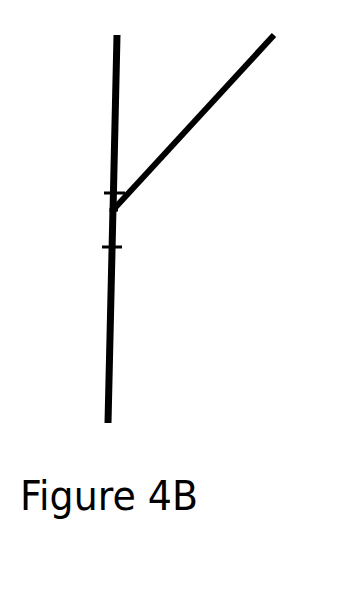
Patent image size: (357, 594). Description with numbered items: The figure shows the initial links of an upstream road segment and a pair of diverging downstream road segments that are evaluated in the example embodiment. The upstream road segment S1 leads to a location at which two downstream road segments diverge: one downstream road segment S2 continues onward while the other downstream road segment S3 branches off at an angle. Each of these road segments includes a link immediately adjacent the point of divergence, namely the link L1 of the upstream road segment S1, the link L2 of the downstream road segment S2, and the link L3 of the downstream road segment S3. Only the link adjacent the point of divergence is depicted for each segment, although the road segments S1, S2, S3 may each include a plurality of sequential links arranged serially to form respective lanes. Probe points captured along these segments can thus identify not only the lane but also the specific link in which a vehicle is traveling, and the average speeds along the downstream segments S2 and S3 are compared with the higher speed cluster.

The upstream road segment S1 is at (86, 315).
The diverging downstream road segment S2 is at (90, 123).
The diverging downstream road segment S3 is at (193, 122).
The link L1 is at (102, 239).
The link L2 is at (102, 203).
The link L3 is at (131, 216).